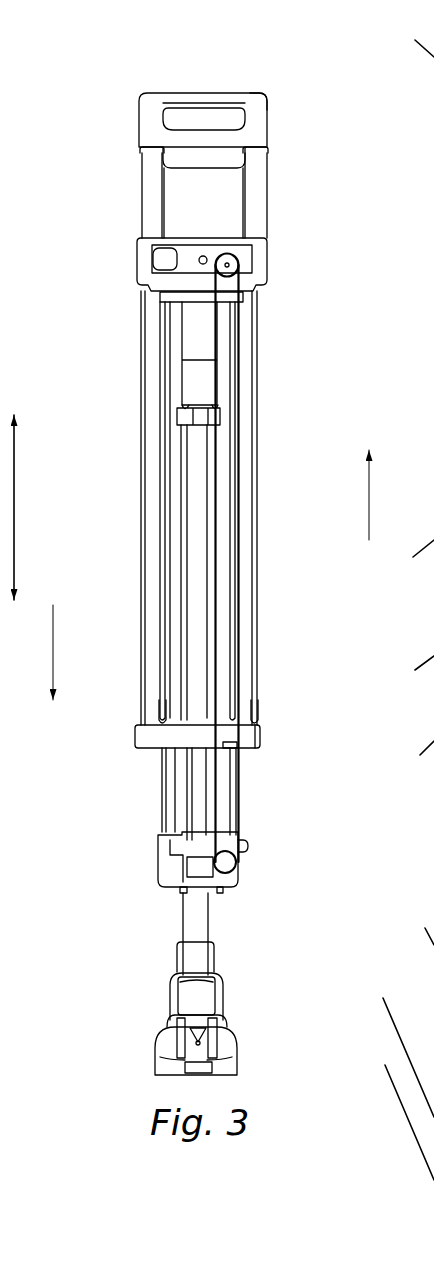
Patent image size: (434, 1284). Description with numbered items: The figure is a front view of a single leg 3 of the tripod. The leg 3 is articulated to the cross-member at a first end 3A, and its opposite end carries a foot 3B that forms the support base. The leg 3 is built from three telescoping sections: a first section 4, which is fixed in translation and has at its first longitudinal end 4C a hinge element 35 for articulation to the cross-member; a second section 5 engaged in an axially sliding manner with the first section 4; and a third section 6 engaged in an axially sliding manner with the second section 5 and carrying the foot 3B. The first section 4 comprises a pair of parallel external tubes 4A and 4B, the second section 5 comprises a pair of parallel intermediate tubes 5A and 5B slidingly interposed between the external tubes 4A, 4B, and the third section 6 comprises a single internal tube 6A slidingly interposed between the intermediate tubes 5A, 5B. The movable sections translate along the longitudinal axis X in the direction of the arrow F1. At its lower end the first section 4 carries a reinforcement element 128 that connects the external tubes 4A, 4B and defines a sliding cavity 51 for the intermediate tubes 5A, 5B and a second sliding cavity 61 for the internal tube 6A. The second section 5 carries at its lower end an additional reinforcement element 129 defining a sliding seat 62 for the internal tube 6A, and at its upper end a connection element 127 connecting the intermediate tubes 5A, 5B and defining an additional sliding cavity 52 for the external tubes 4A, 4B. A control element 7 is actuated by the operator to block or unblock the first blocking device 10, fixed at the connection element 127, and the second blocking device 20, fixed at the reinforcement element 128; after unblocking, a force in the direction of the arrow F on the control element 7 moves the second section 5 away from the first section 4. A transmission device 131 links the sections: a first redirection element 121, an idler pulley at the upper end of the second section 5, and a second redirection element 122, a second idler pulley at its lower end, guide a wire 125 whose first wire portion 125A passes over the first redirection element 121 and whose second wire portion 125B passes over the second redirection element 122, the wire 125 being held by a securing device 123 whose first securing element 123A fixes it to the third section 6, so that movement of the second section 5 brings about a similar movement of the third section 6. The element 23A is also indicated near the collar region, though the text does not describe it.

The leg 3 is at (344, 120).
The first end 3A is at (97, 127).
The foot 3B is at (232, 1027).
The hinge element 35 is at (284, 78).
The first section 4 is at (305, 204).
The external tube 4A is at (250, 692).
The external tube 4B is at (150, 696).
The first longitudinal end 4C is at (115, 203).
The second section 5 is at (283, 385).
The intermediate tube 5A is at (256, 727).
The intermediate tube 5B is at (145, 722).
The third section 6 is at (204, 951).
The internal tube 6A is at (200, 906).
The control element 7 is at (125, 262).
The first blocking device 10 is at (125, 277).
The second blocking device 20 is at (117, 740).
The collar end 23A is at (262, 738).
The sliding cavity 51 is at (160, 780).
The additional sliding cavity 52 is at (270, 289).
The second sliding cavity 61 is at (263, 774).
The sliding seat 62 is at (263, 852).
The first redirection element 121 is at (229, 256).
The second redirection element 122 is at (249, 868).
The securing device 123 is at (123, 398).
The first securing element 123A is at (224, 411).
The wire 125 is at (219, 622).
The first wire portion 125A is at (197, 371).
The second wire portion 125B is at (200, 500).
The connection element 127 is at (240, 263).
The reinforcement element 128 is at (166, 750).
The additional reinforcement element 129 is at (158, 870).
The transmission device 131 is at (268, 355).
The longitudinal axis X is at (369, 505).
The arrow F is at (53, 640).
The arrow F1 is at (31, 507).